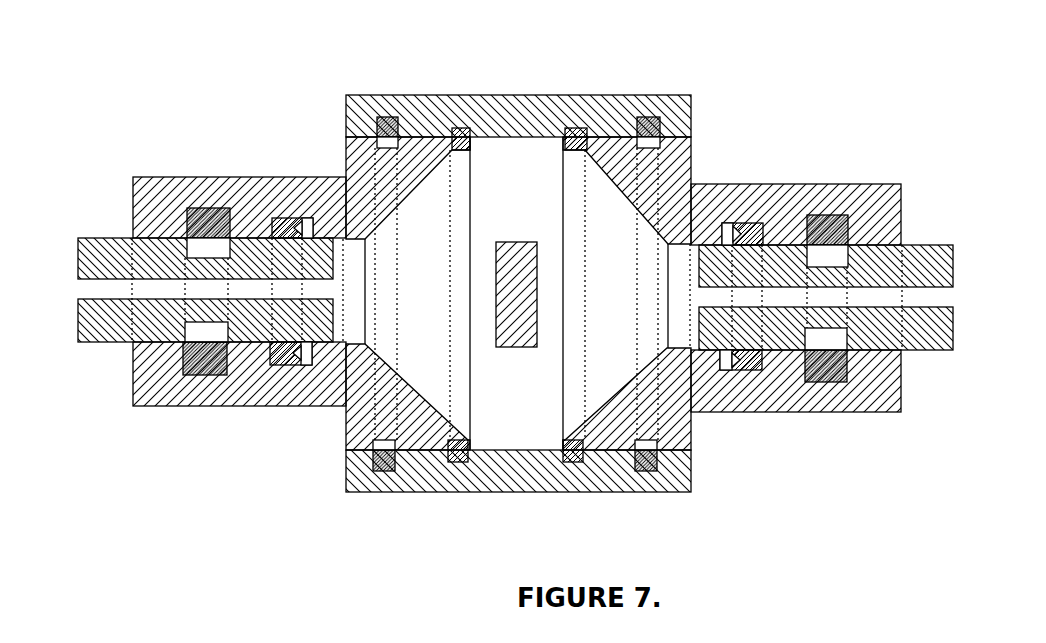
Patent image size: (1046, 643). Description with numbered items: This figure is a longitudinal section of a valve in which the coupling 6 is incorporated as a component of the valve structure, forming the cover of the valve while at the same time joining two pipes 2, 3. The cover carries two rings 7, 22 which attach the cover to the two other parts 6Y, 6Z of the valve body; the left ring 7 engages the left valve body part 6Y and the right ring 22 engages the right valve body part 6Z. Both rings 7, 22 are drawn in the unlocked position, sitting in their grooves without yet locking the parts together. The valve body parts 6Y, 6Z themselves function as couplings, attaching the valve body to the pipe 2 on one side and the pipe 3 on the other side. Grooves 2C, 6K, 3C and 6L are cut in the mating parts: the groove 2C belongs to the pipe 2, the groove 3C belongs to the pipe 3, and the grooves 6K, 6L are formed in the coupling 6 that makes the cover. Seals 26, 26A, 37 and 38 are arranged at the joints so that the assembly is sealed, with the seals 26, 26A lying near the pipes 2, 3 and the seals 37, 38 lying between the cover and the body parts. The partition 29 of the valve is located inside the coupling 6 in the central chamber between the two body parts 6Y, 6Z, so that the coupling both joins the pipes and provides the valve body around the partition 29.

The pipe 2 is at (112, 237).
The pipe 3 is at (937, 350).
The coupling 6 is at (502, 107).
The valve body part 6Y is at (180, 182).
The valve body part 6Z is at (788, 200).
The groove 6K is at (232, 208).
The groove 6L is at (652, 117).
The ring 7 is at (210, 363).
The ring 22 is at (848, 233).
The seal 26 is at (307, 218).
The seal 26A is at (748, 370).
The partition 29 is at (500, 337).
The groove 2C is at (378, 467).
The groove 3C is at (820, 255).
The seal 37 is at (468, 143).
The seal 38 is at (575, 460).